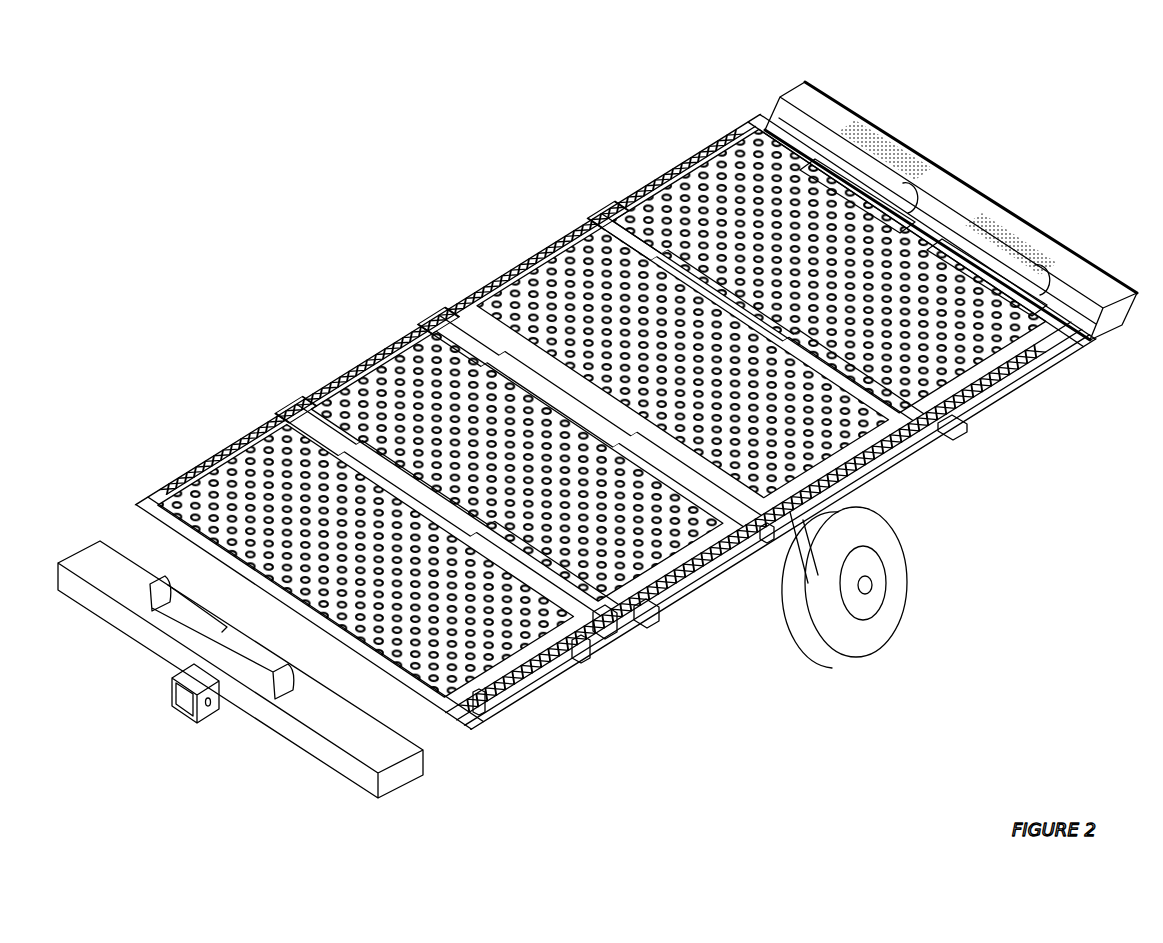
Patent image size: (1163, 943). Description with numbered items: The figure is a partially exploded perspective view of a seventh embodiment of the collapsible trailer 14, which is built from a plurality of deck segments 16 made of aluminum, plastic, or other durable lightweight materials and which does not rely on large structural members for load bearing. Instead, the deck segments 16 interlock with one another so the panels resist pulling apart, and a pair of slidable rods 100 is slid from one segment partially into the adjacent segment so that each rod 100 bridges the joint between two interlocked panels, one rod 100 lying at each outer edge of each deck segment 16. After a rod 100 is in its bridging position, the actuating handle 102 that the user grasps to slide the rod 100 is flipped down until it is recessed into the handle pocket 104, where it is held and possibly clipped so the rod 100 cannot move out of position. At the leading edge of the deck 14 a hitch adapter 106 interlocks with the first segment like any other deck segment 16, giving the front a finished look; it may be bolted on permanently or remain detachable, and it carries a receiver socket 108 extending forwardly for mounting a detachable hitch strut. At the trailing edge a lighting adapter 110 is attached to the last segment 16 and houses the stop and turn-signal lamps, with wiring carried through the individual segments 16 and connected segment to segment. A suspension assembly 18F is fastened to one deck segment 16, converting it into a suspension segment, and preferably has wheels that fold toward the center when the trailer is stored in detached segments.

The collapsible trailer 14 is at (318, 217).
The deck segment 16 is at (207, 420).
The suspension assembly 18F is at (882, 655).
The slidable rod 100 is at (595, 634).
The actuating handle 102 is at (660, 618).
The handle pocket 104 is at (966, 435).
The hitch adapter 106 is at (403, 773).
The receiver socket 108 is at (170, 703).
The lighting adapter 110 is at (1010, 228).